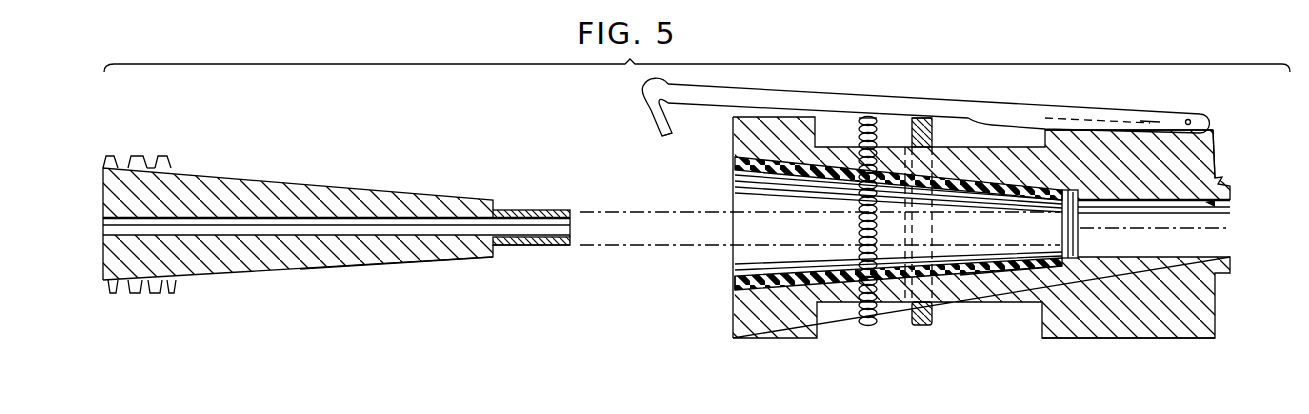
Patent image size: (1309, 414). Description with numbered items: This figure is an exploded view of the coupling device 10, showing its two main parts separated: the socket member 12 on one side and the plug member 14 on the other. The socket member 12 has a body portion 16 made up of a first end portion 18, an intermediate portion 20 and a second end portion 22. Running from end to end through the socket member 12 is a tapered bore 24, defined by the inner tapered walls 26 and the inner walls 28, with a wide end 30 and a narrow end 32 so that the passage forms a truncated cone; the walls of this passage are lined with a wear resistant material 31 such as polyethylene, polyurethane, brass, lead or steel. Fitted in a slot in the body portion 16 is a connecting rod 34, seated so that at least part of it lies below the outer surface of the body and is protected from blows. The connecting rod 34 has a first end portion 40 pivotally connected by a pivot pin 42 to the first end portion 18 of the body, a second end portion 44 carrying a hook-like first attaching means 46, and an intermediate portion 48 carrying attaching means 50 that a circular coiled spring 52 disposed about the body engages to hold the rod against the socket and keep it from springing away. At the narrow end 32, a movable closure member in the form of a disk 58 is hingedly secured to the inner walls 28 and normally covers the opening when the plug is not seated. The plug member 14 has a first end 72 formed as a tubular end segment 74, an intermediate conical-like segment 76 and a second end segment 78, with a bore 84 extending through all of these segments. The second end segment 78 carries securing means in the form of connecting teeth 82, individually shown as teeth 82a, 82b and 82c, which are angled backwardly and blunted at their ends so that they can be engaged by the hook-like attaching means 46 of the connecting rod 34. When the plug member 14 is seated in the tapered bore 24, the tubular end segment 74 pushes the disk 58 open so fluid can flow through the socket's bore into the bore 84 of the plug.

The coupling device 10 is at (925, 325).
The socket member 12 is at (937, 229).
The plug member 14 is at (240, 290).
The body portion 16 is at (1135, 338).
The first end portion 18 is at (1212, 150).
The intermediate portion 20 is at (970, 302).
The second end portion 22 is at (757, 338).
The tapered bore 24 is at (852, 300).
The inner tapered walls 26 is at (735, 282).
The inner walls 28 is at (1222, 204).
The wide end 30 is at (735, 262).
The wear resistant material 31 is at (905, 300).
The narrow end 32 is at (1022, 264).
The connecting rod 34 is at (1020, 116).
The first end portion 40 is at (1148, 120).
The pivot pin 42 is at (1189, 119).
The second end portion 44 is at (648, 80).
The first attaching means 46 is at (660, 126).
The intermediate portion 48 is at (905, 115).
The attaching means 50 is at (860, 118).
The spring 52 is at (870, 325).
The disk 58 is at (1080, 236).
The first end 72 is at (549, 270).
The tubular end segment 74 is at (522, 255).
The intermediate conical-like segment 76 is at (340, 268).
The second end segment 78 is at (152, 178).
The connecting teeth 82 is at (125, 172).
The rib 82a is at (167, 293).
The rib 82b is at (145, 293).
The rib 82c is at (114, 292).
The bore 84 is at (320, 224).